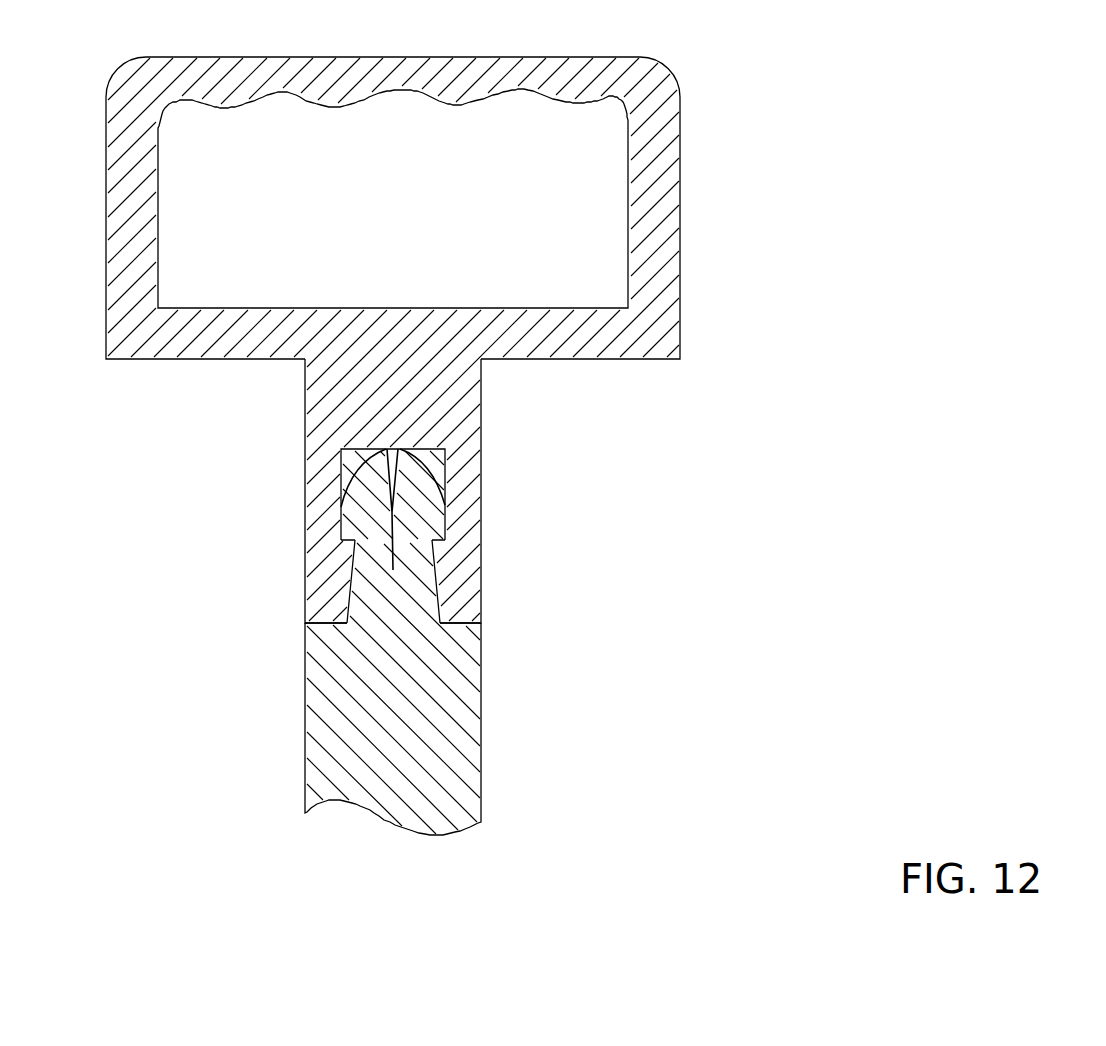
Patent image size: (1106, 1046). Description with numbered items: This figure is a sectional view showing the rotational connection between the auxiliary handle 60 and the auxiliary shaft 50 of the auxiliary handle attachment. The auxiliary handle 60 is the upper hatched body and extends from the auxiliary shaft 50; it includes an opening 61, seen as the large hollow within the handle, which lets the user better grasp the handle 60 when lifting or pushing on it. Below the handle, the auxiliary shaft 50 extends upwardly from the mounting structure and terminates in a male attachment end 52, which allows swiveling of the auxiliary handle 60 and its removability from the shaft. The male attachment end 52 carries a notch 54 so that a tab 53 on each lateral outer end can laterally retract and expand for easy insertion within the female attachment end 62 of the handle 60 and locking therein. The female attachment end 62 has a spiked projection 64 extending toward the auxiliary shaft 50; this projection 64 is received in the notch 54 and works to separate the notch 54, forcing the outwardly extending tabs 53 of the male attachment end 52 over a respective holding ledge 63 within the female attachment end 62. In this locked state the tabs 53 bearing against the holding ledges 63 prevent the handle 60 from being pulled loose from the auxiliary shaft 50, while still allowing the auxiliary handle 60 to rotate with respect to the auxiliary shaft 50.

The auxiliary shaft 50 is at (481, 720).
The male attachment end 52 is at (395, 593).
The tab 53 is at (348, 521).
The notch 54 is at (348, 572).
The auxiliary handle 60 is at (680, 243).
The opening 61 is at (587, 132).
The female attachment end 62 is at (341, 466).
The holding ledge 63 is at (435, 540).
The spiked projection 64 is at (393, 452).